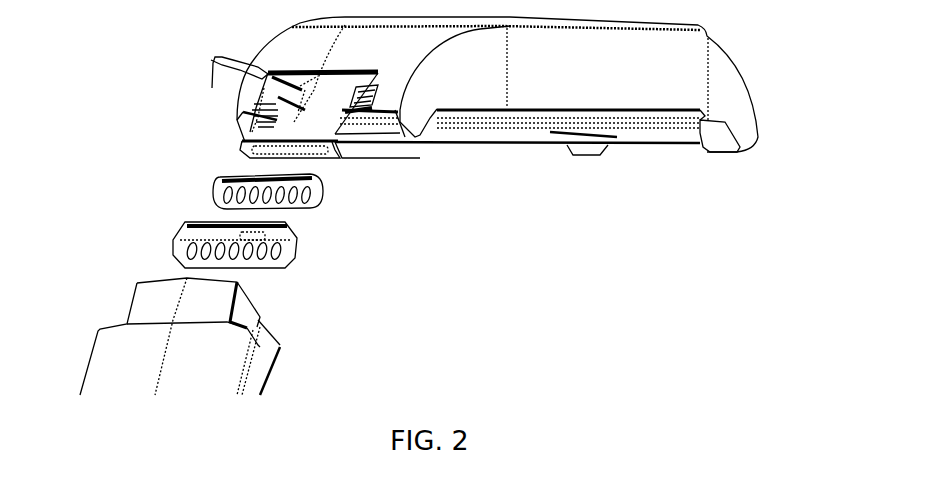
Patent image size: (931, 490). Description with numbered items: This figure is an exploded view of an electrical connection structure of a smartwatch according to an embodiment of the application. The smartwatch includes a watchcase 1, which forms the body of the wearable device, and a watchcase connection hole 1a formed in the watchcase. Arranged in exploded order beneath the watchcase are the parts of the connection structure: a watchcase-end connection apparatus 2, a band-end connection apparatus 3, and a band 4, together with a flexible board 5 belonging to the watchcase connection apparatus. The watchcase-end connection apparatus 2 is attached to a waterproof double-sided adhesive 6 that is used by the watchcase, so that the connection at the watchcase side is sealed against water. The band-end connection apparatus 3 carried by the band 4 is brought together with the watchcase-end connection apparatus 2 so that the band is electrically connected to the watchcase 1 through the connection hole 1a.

The watchcase 1 is at (607, 100).
The watchcase connection hole 1a is at (220, 90).
The watchcase-end connection apparatus 2 is at (320, 200).
The band-end connection apparatus 3 is at (295, 258).
The band 4 is at (215, 382).
The flexible board 5 is at (325, 163).
The waterproof double-sided adhesive 6 is at (343, 160).